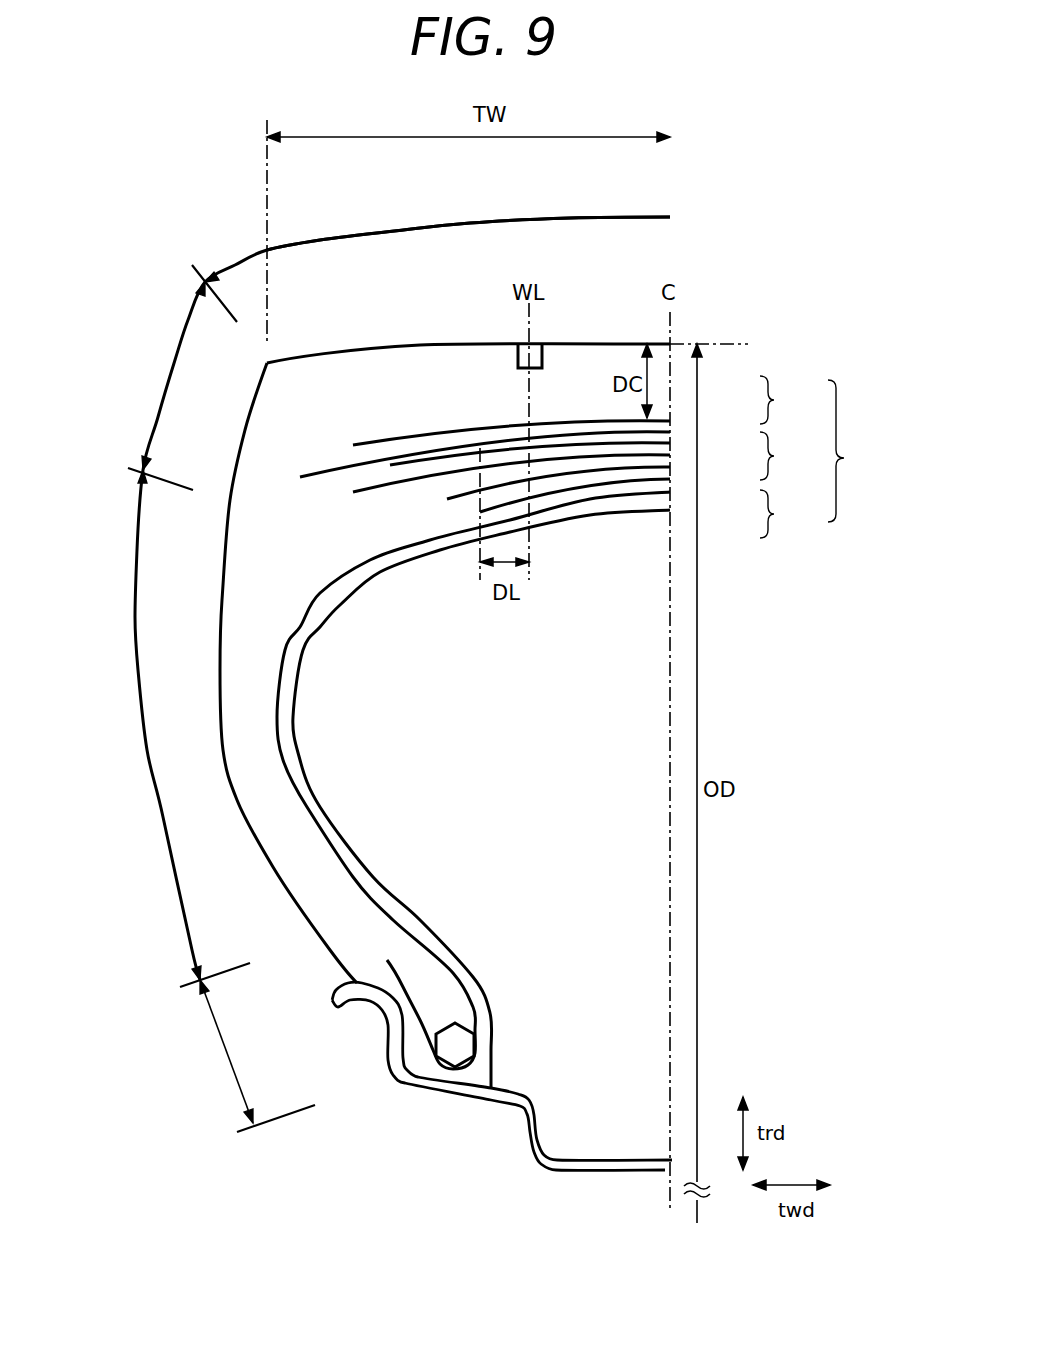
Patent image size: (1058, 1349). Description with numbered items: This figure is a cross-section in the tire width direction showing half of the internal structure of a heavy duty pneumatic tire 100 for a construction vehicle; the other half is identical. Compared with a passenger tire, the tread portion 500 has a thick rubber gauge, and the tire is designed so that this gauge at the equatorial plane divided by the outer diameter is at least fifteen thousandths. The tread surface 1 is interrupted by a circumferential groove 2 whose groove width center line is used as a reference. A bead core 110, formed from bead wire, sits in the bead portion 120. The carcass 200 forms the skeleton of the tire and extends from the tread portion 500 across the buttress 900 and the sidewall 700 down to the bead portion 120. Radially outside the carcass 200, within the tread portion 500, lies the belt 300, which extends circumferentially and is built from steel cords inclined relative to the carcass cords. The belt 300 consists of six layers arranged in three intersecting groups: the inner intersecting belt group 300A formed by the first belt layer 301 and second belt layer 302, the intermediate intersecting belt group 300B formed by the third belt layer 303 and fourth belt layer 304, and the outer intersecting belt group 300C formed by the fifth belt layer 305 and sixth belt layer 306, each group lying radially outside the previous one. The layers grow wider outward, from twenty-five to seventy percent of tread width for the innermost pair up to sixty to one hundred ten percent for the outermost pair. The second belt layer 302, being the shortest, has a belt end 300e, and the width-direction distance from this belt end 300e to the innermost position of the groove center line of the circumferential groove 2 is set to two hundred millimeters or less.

The tire 100 is at (710, 300).
The tread portion 500 is at (405, 228).
The tread surface 1 is at (423, 343).
The circumferential groove 2 is at (535, 337).
The buttress 900 is at (167, 380).
The sidewall 700 is at (135, 627).
The bead portion 120 is at (218, 1047).
The carcass 200 is at (350, 880).
The bead core 110 is at (458, 1045).
The belt 300 is at (861, 451).
The inner intersecting belt group 300A is at (796, 514).
The intermediate intersecting belt group 300B is at (796, 456).
The outer intersecting belt group 300C is at (796, 400).
The first belt layer 301 is at (670, 479).
The second belt layer 302 is at (670, 467).
The third belt layer 303 is at (670, 455).
The fourth belt layer 304 is at (670, 443).
The fifth belt layer 305 is at (670, 432).
The sixth belt layer 306 is at (670, 421).
The belt end 300e is at (467, 479).